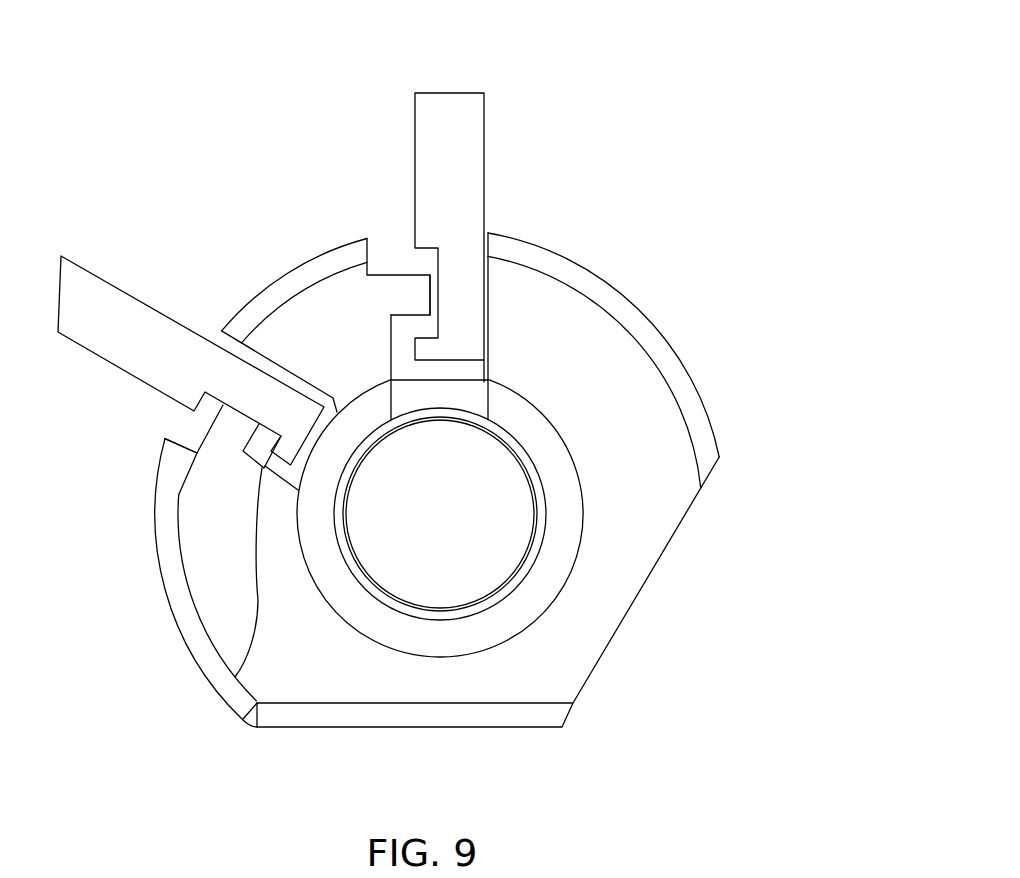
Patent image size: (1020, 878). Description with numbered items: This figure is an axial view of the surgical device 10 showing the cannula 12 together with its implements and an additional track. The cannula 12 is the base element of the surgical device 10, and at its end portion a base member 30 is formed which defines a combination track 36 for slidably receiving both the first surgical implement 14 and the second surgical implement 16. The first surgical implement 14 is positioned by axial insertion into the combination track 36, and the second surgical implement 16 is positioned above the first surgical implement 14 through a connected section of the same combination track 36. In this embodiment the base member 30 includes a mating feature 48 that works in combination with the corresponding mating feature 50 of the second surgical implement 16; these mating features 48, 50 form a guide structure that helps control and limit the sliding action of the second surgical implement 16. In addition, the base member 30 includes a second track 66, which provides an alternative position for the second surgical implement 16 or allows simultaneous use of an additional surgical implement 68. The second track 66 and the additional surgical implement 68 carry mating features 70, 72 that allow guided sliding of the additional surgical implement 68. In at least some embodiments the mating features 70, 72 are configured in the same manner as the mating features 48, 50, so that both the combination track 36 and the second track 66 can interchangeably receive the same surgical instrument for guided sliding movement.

The surgical device 10 is at (678, 86).
The cannula 12 is at (222, 595).
The first surgical implement 14 is at (485, 567).
The second surgical implement 16 is at (460, 119).
The base member 30 is at (662, 460).
The combination track 36 is at (494, 470).
The mating feature 48 is at (413, 352).
The mating feature 50 is at (430, 307).
The second track 66 is at (212, 474).
The additional surgical implement 68 is at (82, 298).
The mating feature 70 is at (256, 704).
The mating feature 72 is at (266, 466).